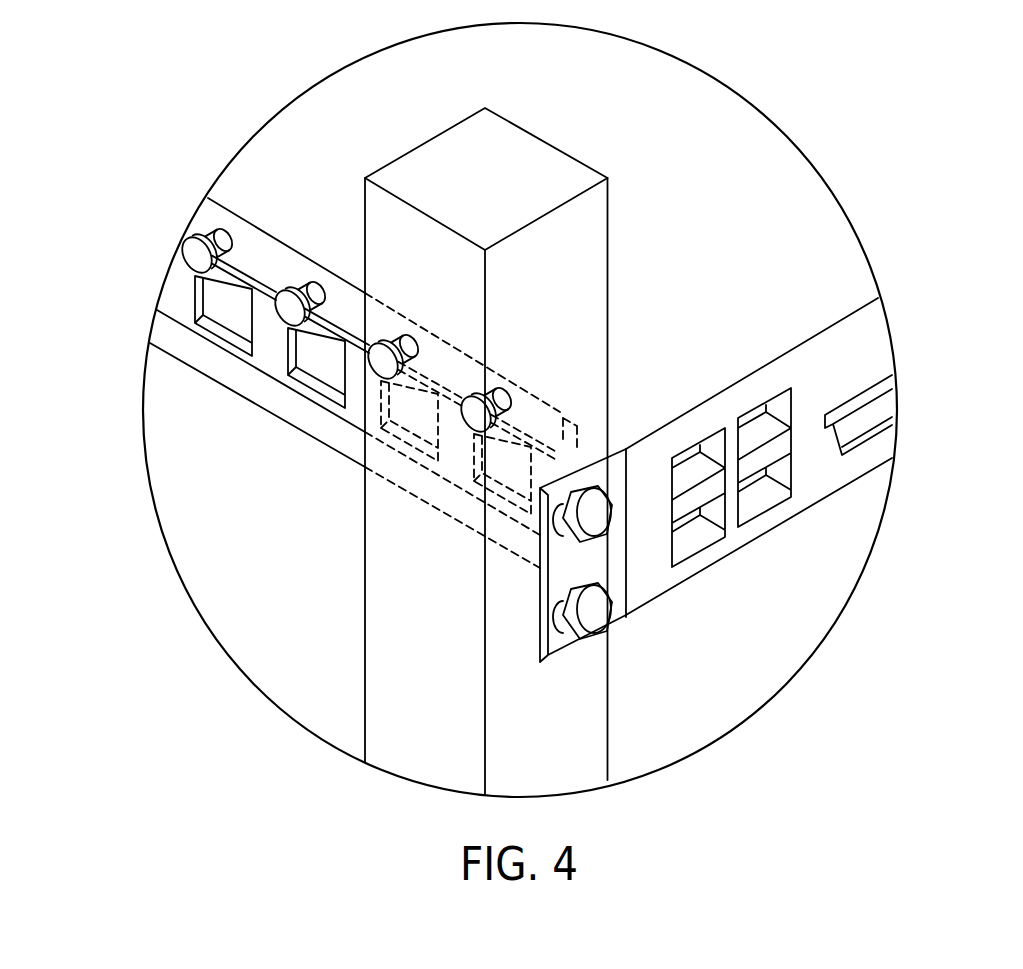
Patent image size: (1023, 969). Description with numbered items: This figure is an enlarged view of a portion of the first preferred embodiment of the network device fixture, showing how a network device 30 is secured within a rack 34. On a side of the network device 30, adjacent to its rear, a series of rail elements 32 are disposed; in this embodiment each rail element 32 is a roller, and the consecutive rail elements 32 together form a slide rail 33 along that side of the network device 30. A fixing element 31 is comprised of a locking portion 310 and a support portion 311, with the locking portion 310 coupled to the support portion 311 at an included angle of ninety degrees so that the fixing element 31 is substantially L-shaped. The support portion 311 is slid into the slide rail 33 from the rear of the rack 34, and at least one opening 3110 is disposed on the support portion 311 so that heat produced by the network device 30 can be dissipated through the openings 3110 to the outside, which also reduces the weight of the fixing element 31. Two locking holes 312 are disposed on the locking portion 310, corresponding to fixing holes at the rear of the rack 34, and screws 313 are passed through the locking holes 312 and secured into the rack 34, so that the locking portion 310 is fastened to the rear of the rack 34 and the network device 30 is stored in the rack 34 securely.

The network device 30 is at (762, 323).
The fixing element 31 is at (553, 583).
The locking portion 310 is at (573, 567).
The support portion 311 is at (357, 412).
The opening 3110 is at (233, 305).
The locking hole 312 is at (573, 633).
The screw 313 is at (593, 515).
The rail element 32 is at (197, 258).
The slide rail 33 is at (328, 355).
The rack 34 is at (527, 160).